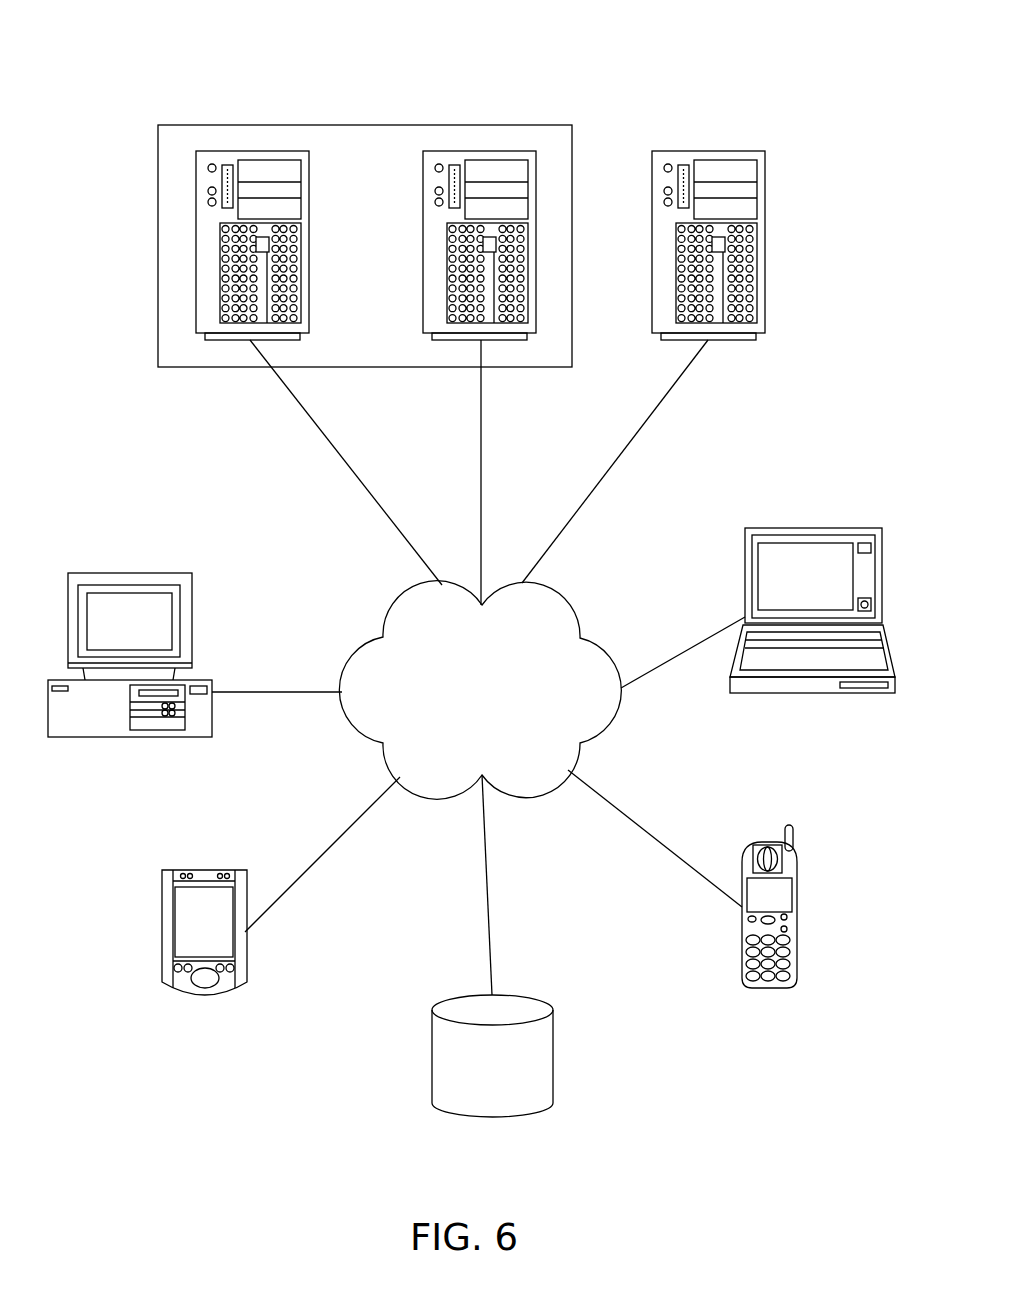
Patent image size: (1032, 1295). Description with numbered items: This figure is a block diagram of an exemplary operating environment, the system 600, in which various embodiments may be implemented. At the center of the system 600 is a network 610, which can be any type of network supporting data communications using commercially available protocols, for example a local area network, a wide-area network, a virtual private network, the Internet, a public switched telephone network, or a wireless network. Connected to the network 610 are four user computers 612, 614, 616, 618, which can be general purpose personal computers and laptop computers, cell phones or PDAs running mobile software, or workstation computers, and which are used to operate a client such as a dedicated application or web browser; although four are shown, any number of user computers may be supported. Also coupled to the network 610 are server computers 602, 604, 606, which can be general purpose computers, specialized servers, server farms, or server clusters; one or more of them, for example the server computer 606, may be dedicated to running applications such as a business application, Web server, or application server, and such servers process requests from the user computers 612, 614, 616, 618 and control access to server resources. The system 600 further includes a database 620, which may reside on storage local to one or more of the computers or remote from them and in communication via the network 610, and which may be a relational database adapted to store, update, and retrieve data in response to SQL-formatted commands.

The system 600 is at (772, 97).
The server computer 602 is at (233, 151).
The server computer 604 is at (478, 151).
The server computer 606 is at (766, 243).
The network 610 is at (463, 742).
The user computer 612 is at (125, 573).
The user computer 614 is at (808, 528).
The user computer 616 is at (767, 990).
The user computer 618 is at (203, 997).
The database 620 is at (511, 1106).